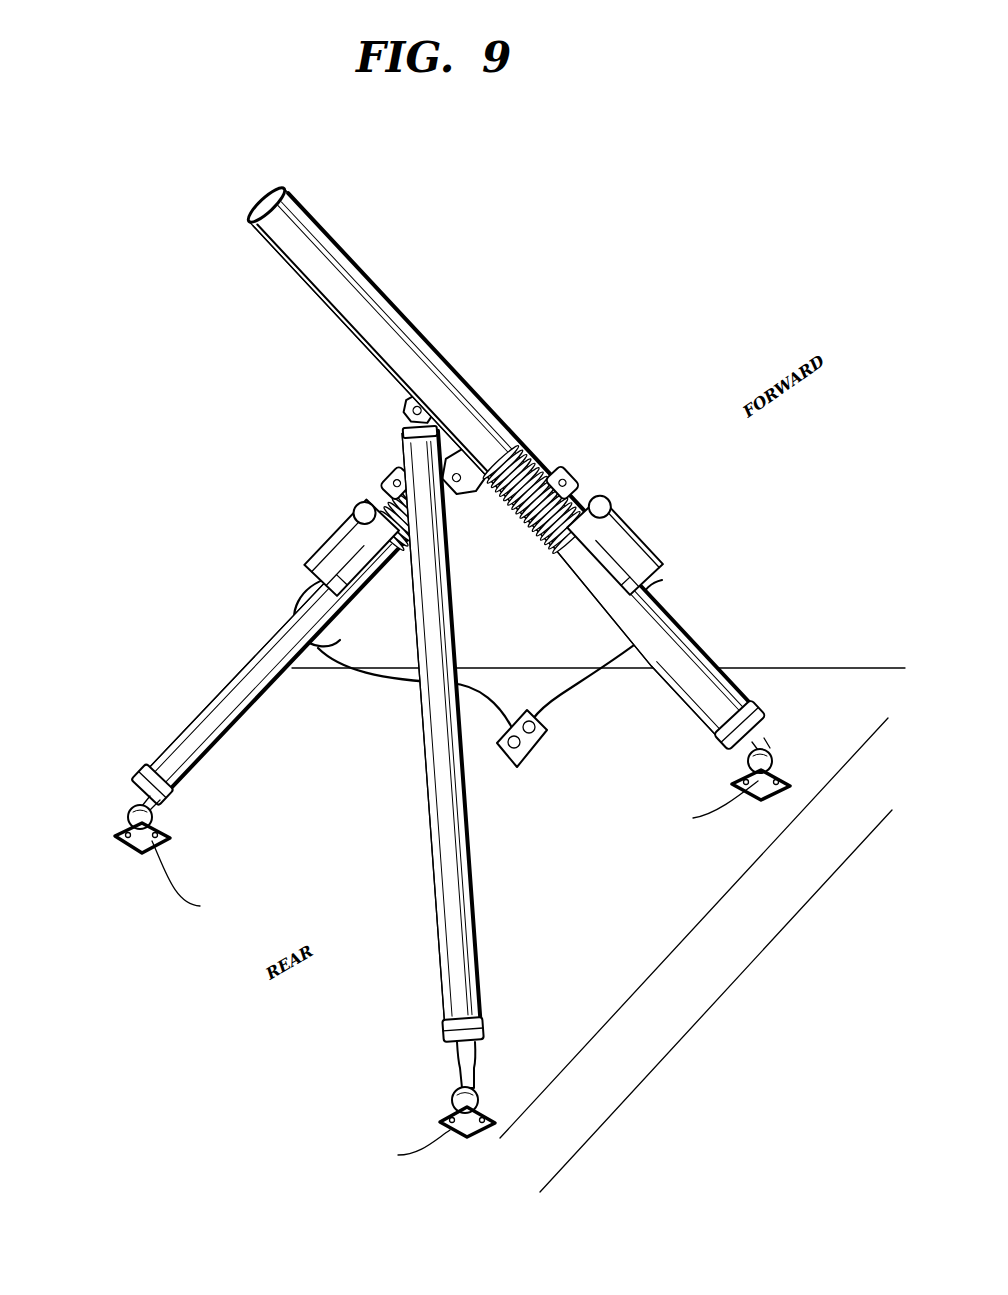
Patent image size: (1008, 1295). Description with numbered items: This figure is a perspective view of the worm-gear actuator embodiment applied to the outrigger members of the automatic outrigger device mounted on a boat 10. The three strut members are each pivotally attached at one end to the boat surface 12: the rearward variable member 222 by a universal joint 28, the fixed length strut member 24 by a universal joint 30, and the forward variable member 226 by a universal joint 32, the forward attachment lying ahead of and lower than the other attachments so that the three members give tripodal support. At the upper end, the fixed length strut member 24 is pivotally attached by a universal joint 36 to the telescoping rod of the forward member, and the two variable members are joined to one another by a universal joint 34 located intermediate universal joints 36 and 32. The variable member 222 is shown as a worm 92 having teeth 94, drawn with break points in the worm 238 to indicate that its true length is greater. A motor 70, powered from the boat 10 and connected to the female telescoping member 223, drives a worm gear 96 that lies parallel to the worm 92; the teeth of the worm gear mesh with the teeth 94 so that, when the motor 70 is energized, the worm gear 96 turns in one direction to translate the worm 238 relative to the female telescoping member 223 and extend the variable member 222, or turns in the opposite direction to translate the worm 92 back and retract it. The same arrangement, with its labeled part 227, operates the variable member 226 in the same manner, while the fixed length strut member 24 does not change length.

The worm 92 is at (367, 283).
The universal joint 36 is at (408, 402).
The universal joint 34 is at (468, 462).
The worm gear 96 is at (592, 470).
The motor 70 is at (640, 542).
The teeth 94 is at (524, 505).
The worm 238 is at (457, 500).
The variable member 222 is at (258, 634).
The female telescoping member 223 is at (232, 701).
The variable member 226 is at (712, 630).
The reference plane line 227 is at (718, 686).
The universal joint 32 is at (773, 755).
The universal joint 28 is at (123, 836).
The fixed length strut member 24 is at (468, 895).
The universal joint 30 is at (493, 1105).
The boat 10 is at (785, 893).
The boat surface 12 is at (617, 979).